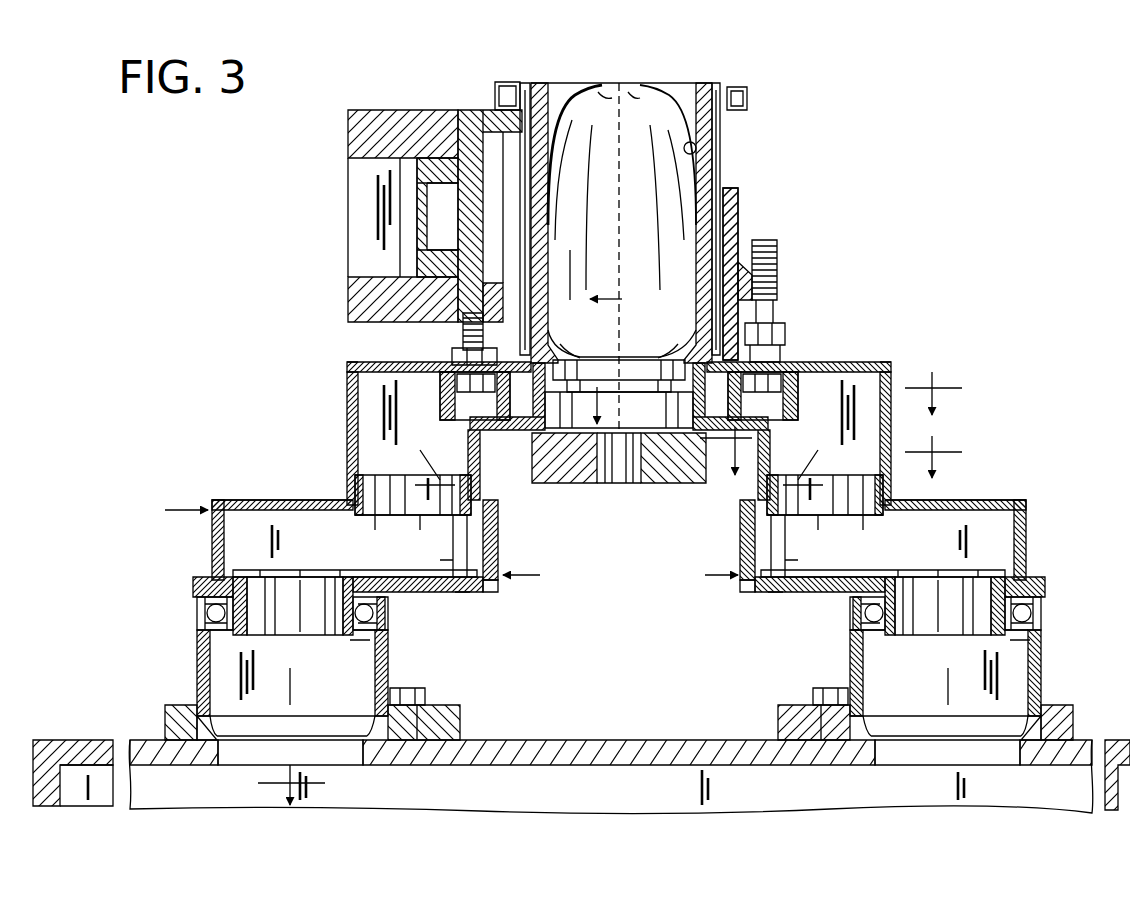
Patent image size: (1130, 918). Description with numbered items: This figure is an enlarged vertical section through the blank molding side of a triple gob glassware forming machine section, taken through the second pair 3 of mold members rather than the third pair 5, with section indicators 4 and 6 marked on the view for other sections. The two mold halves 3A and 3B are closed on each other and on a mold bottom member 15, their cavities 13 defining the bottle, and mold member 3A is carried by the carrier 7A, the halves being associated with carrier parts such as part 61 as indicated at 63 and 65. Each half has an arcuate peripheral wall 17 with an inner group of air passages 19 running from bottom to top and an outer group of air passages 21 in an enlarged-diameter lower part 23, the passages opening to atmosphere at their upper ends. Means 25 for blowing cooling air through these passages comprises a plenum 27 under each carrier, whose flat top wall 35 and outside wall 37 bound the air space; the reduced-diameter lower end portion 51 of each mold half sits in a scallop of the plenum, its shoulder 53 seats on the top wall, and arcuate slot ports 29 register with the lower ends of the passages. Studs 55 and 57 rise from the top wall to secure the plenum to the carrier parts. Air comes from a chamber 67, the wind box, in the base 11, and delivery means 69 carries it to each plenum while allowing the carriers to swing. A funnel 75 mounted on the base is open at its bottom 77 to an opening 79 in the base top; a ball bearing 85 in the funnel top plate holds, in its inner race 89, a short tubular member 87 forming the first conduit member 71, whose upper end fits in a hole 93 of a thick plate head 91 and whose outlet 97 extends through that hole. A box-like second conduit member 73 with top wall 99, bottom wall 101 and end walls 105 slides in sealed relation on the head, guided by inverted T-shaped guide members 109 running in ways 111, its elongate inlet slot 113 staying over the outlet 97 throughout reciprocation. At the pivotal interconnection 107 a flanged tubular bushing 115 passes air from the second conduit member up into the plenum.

The second pair of mold members 3 is at (655, 202).
The mold member 3A is at (547, 84).
The mold member 3B is at (692, 84).
The section line 4 is at (446, 544).
The third pair of mold members 5 is at (753, 397).
The section line 6 is at (831, 452).
The carrier 7A is at (543, 235).
The base 11 is at (620, 740).
The cavity 13 is at (696, 150).
The mold bottom member 15 is at (603, 362).
The arcuate peripheral wall 17 is at (546, 214).
The air passages 19 is at (523, 86).
The air passages 21 is at (500, 207).
The enlarged-diameter lower part 23 is at (740, 196).
The means for blowing air 25 is at (167, 509).
The plenum 27 is at (345, 365).
The ports 29 is at (619, 396).
The top wall 35 is at (352, 362).
The outside wall 37 is at (348, 404).
The reduced-diameter lower end portion 51 is at (512, 430).
The shoulder portion 53 is at (583, 350).
The stud 55 is at (458, 345).
The stud 57 is at (782, 305).
The part on carrier 61 is at (465, 108).
The association of mold half with carrier part 63 is at (488, 298).
The association of mold half with carrier part 65 is at (505, 84).
The chamber 67 is at (626, 802).
The delivery means 69 is at (620, 577).
The first conduit member 71 is at (205, 650).
The second conduit member 73 is at (255, 500).
The compartment (funnel) 75 is at (390, 680).
The open bottom of funnel 77 is at (180, 728).
The opening in top of base 79 is at (240, 772).
The ball bearing 85 is at (200, 612).
The tubular member 87 is at (272, 635).
The inner race 89 is at (350, 638).
The head (plate) 91 is at (418, 594).
The hole in head 93 is at (240, 578).
The outlet (upper end of tubular member) 97 is at (325, 590).
The top wall 99 is at (322, 500).
The bottom wall 101 is at (445, 577).
The end walls 105 is at (212, 540).
The pivotal interconnection 107 is at (350, 515).
The guide members 109 is at (492, 590).
The guide channels (ways) 111 is at (455, 595).
The air inlet opening 113 is at (295, 577).
The tubular bushing 115 is at (400, 470).